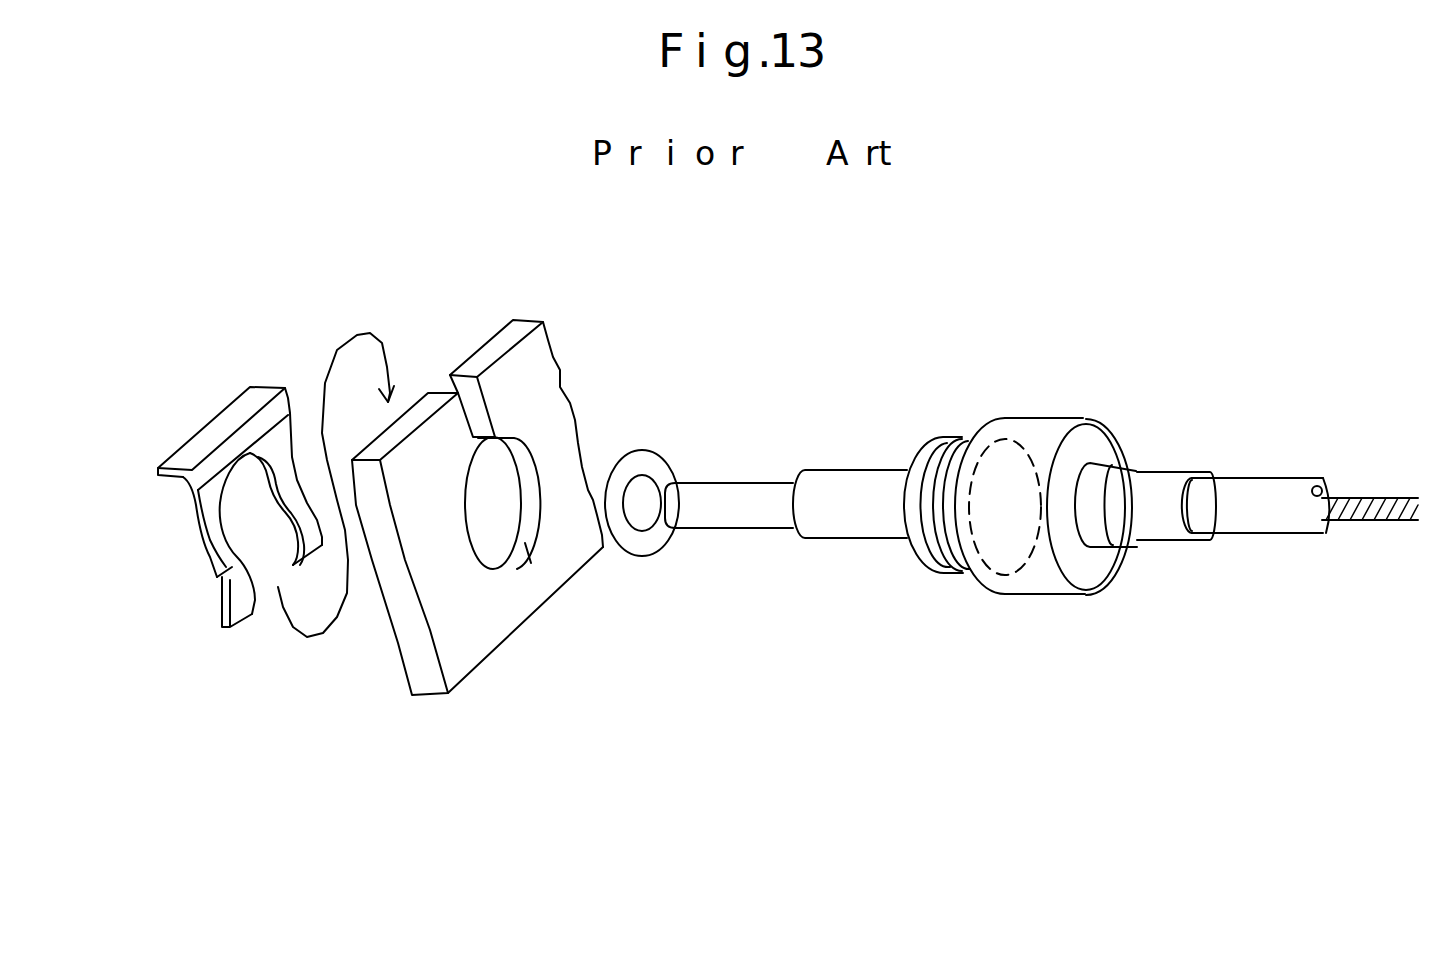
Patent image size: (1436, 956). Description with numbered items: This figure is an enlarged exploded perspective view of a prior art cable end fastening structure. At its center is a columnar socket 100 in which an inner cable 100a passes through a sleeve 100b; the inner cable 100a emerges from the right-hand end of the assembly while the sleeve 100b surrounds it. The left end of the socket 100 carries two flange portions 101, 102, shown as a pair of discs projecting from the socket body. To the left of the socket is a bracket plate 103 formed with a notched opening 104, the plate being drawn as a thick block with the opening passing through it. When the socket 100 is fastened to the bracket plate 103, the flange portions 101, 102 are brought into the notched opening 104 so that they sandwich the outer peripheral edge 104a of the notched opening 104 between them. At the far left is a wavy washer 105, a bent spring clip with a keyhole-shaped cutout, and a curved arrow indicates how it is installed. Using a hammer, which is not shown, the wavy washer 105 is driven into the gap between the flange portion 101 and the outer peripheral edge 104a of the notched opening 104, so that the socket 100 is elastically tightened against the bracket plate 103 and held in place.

The socket 100 is at (1067, 401).
The inner cable 100a is at (1378, 517).
The sleeve 100b is at (1257, 517).
The flange portion 101 is at (925, 553).
The flange portion 102 is at (953, 545).
The bracket plate 103 is at (482, 627).
The notched opening 104 is at (530, 555).
The outer peripheral edge 104a is at (550, 530).
The wavy washer 105 is at (230, 568).